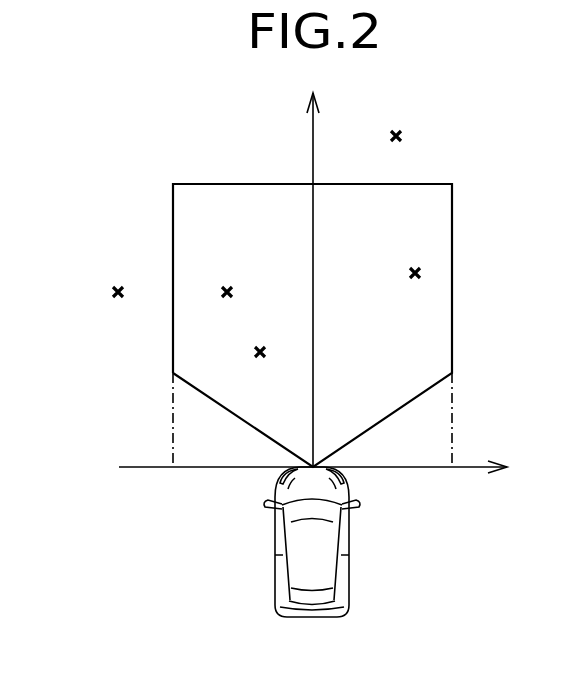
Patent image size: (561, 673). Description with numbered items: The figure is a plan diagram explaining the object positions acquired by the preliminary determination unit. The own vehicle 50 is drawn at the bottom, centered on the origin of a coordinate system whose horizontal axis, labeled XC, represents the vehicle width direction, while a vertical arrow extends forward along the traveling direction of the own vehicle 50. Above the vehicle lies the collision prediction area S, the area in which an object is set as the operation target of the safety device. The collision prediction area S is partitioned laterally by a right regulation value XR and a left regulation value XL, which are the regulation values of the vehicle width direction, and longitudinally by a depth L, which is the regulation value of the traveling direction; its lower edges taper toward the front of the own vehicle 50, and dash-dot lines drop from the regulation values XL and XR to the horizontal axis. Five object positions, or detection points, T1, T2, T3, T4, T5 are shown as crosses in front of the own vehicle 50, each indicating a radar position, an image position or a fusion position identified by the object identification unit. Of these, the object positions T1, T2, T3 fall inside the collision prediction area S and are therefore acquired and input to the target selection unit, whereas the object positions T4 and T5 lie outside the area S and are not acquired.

The object position T1 is at (422, 272).
The object position T2 is at (254, 352).
The object position T3 is at (223, 286).
The object position T4 is at (112, 292).
The object position T5 is at (404, 135).
The collision prediction area S is at (199, 184).
The own vehicle 50 is at (274, 588).
The depth L is at (321, 280).
The lateral axis XC is at (313, 510).
The left regulation value XL is at (172, 439).
The right regulation value XR is at (453, 439).